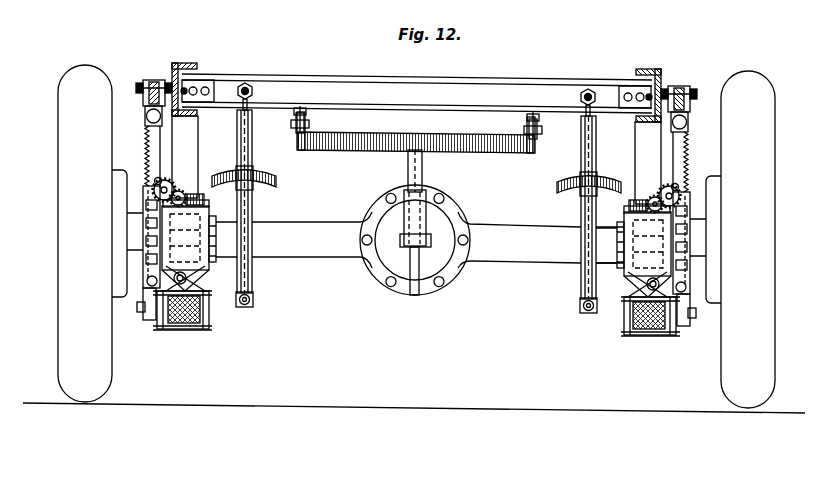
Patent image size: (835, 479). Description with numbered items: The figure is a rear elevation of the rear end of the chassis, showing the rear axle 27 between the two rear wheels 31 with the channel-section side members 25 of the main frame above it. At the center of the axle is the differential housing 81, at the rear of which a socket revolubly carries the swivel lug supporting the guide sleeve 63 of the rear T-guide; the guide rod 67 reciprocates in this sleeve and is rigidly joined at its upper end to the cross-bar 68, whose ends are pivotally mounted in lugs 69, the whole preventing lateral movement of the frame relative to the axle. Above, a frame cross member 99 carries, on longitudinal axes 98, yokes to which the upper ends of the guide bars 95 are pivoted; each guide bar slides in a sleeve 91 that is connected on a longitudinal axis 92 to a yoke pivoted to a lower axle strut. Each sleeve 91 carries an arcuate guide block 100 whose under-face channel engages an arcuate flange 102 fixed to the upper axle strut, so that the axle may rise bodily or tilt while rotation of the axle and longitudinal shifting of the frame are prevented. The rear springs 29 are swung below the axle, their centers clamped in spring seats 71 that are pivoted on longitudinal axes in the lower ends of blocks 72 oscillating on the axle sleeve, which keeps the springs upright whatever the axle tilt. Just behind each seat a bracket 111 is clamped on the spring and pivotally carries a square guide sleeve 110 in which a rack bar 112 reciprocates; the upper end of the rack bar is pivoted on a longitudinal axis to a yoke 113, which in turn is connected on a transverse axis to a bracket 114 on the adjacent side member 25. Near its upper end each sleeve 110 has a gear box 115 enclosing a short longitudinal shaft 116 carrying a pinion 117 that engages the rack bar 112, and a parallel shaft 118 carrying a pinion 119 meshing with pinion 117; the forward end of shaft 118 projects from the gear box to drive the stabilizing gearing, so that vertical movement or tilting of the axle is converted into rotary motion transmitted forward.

The side member 25 is at (184, 62).
The rear axle 27 is at (487, 266).
The rear spring 29 is at (186, 326).
The rear wheel 31 is at (68, 86).
The guide sleeve 63 is at (421, 196).
The guide rod 67 is at (408, 171).
The cross-bar 68 is at (368, 137).
The lug 69 is at (297, 108).
The spring seat 71 is at (208, 311).
The block 72 is at (200, 242).
The differential housing 81 is at (386, 284).
The sleeve 91 is at (253, 208).
The longitudinal axis 92 is at (254, 299).
The guide bar 95 is at (238, 130).
The longitudinal axis 98 is at (246, 83).
The frame cross member 99 is at (333, 78).
The guide block 100 is at (256, 172).
The arcuate flange 102 is at (277, 183).
The square guide sleeve 110 is at (145, 212).
The bracket 111 is at (165, 308).
The rack bar 112 is at (147, 148).
The yoke 113 is at (149, 94).
The bracket 114 is at (156, 80).
The gear box 115 is at (157, 181).
The longitudinal shaft 116 is at (154, 190).
The pinion 117 is at (177, 190).
The shaft 118 is at (204, 197).
The pinion 119 is at (188, 198).